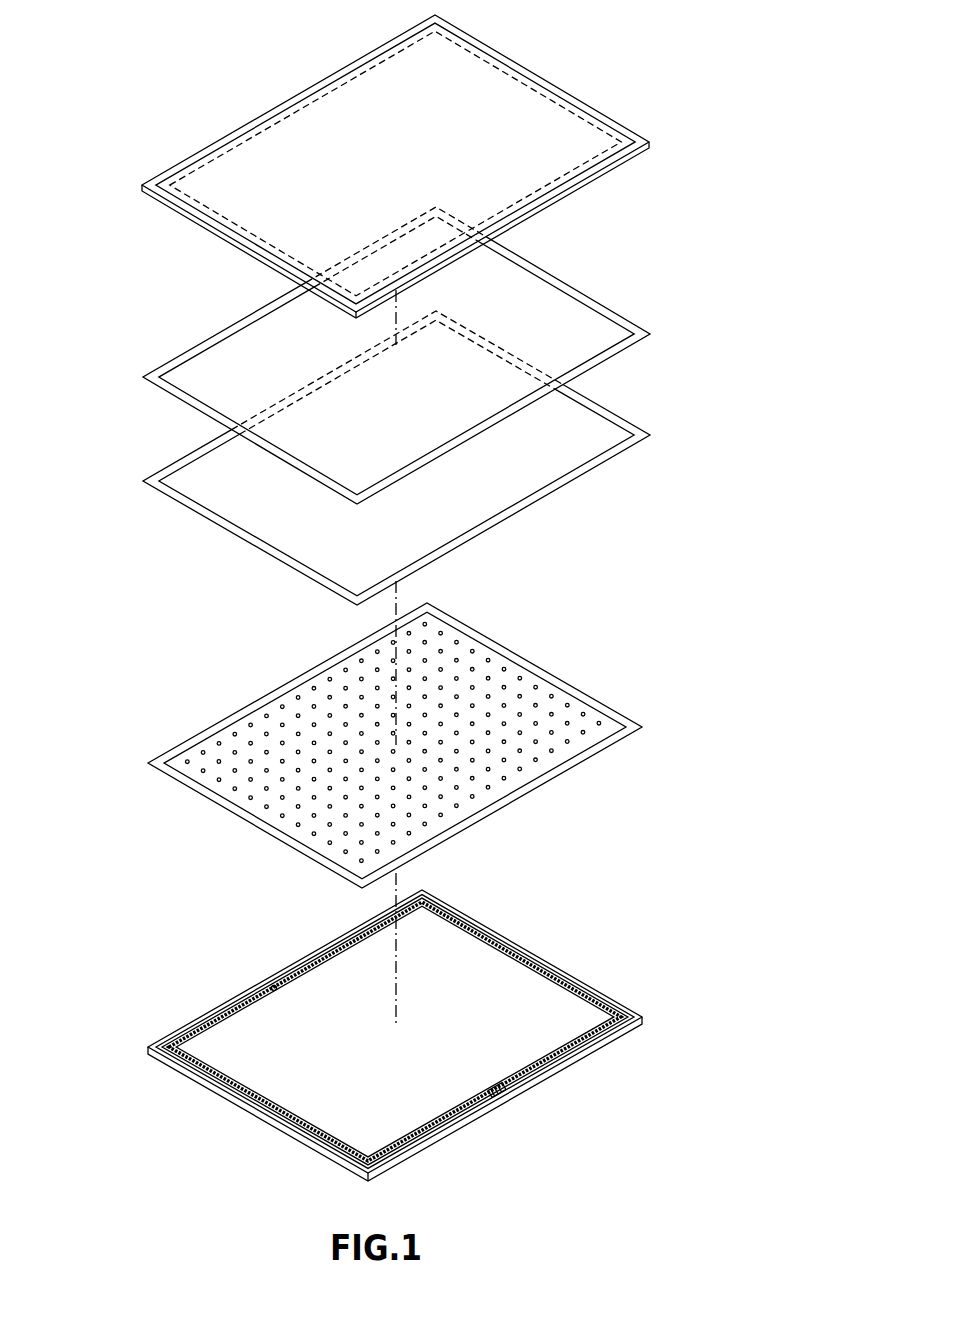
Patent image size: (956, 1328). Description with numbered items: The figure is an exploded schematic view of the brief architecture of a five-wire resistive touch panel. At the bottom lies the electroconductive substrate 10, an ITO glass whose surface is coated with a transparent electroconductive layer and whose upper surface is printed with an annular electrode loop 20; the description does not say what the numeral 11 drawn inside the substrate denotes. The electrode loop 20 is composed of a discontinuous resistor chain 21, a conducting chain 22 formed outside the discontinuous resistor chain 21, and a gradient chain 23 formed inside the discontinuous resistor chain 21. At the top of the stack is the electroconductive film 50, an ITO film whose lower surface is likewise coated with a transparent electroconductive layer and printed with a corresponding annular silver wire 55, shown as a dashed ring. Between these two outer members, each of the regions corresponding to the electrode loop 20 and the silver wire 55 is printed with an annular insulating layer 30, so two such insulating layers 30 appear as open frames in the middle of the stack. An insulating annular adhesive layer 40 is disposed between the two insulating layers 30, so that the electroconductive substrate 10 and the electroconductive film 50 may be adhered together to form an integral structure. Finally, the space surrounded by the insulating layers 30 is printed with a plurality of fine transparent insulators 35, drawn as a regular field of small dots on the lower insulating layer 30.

The electroconductive substrate 10 is at (387, 1037).
The bottom plate of frame 11 is at (403, 1123).
The electrode loop 20 is at (380, 1031).
The discontinuous resistor chain 21 is at (222, 1098).
The conducting chain 22 is at (258, 991).
The gradient chain 23 is at (276, 986).
The insulating layer 30 is at (163, 389).
The fine transparent insulators 35 is at (283, 706).
The insulating annular adhesive layer 40 is at (156, 489).
The electroconductive film 50 is at (372, 166).
The silver wire 55 is at (181, 162).